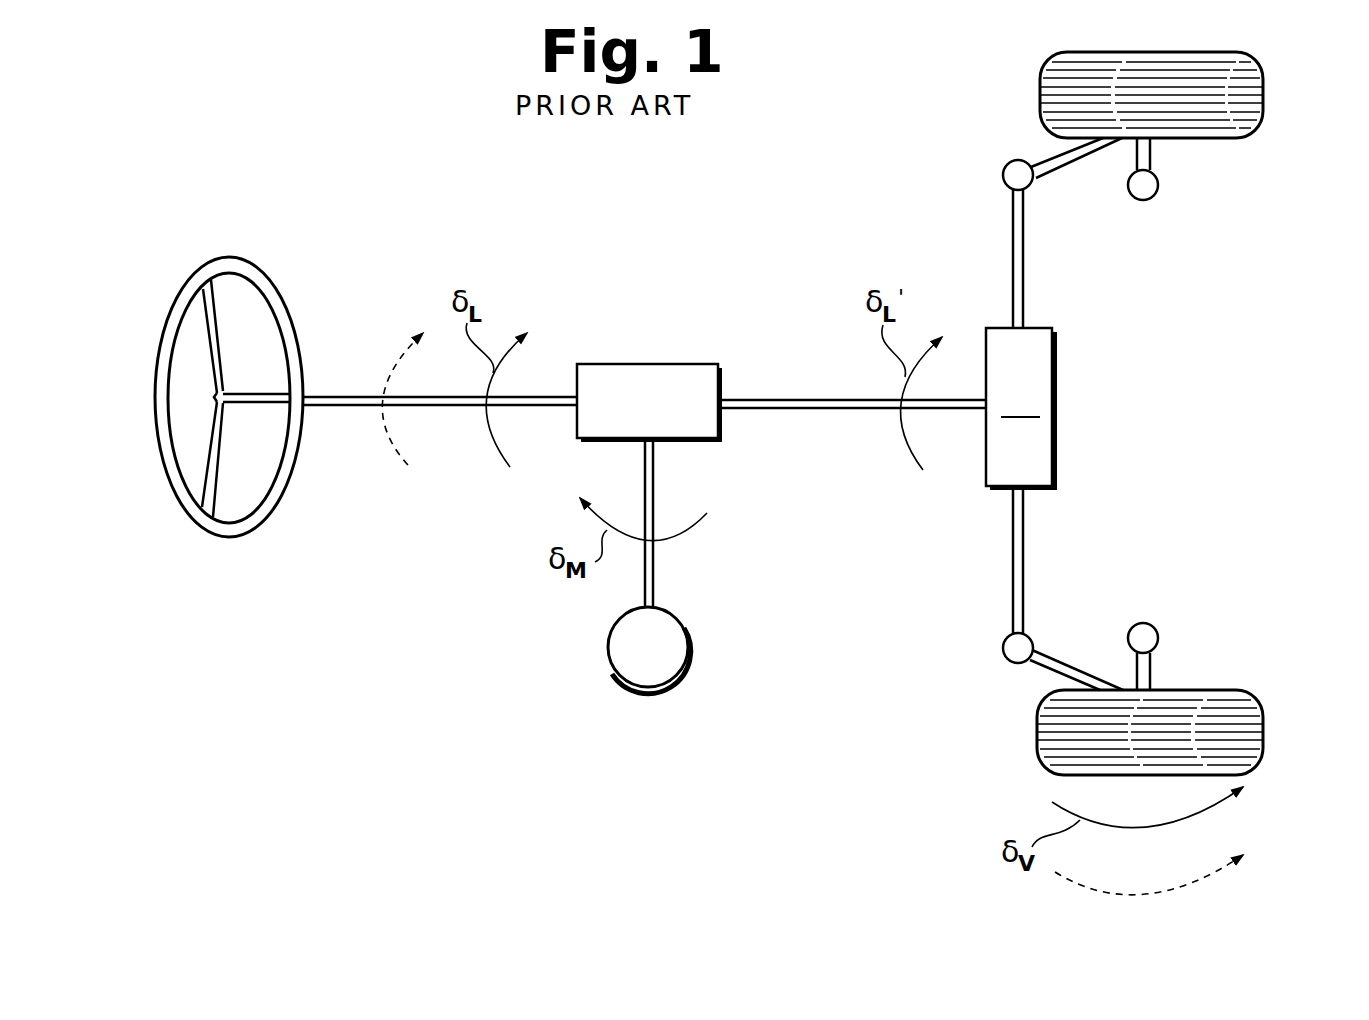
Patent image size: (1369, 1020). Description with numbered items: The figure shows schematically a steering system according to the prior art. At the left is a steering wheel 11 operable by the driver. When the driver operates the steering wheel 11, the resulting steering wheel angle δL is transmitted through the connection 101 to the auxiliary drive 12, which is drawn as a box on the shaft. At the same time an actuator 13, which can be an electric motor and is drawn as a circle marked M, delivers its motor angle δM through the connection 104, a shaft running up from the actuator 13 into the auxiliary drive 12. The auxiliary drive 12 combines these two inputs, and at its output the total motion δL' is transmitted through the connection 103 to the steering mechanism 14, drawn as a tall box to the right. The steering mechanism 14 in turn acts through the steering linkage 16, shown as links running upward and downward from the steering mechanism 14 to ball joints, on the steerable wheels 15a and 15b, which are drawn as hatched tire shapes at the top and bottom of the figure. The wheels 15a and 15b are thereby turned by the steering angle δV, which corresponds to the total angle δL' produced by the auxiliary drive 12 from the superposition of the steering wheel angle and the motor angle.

The steering wheel 11 is at (233, 533).
The auxiliary drive 12 is at (618, 390).
The actuator 13 is at (677, 643).
The steering mechanism 14 is at (1045, 405).
The steerable wheel 15a is at (1250, 115).
The steerable wheel 15b is at (1247, 705).
The steering linkage 16 is at (1023, 260).
The connection 101 is at (540, 408).
The connection 103 is at (945, 412).
The connection 104 is at (655, 482).